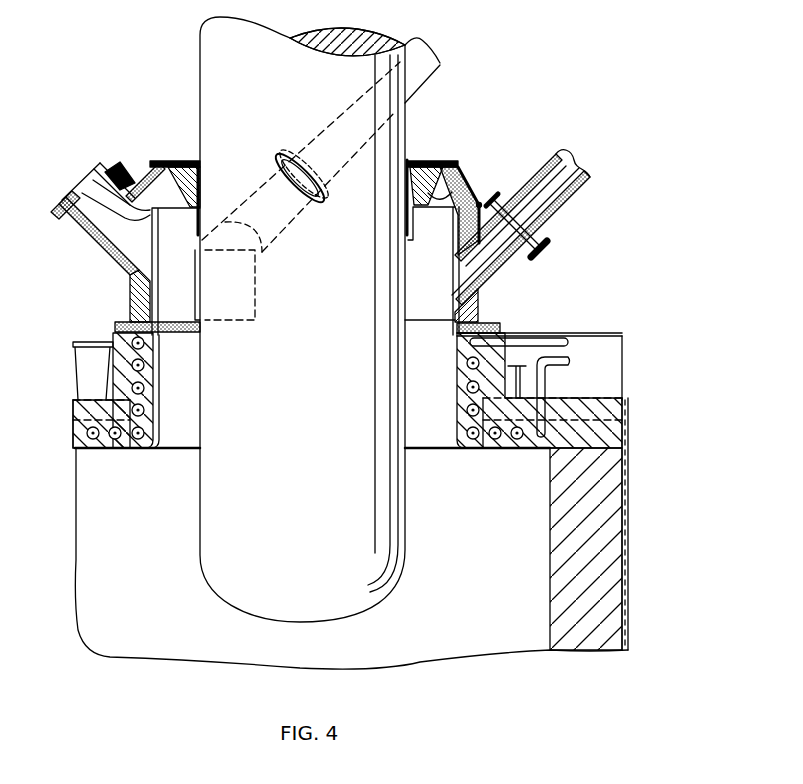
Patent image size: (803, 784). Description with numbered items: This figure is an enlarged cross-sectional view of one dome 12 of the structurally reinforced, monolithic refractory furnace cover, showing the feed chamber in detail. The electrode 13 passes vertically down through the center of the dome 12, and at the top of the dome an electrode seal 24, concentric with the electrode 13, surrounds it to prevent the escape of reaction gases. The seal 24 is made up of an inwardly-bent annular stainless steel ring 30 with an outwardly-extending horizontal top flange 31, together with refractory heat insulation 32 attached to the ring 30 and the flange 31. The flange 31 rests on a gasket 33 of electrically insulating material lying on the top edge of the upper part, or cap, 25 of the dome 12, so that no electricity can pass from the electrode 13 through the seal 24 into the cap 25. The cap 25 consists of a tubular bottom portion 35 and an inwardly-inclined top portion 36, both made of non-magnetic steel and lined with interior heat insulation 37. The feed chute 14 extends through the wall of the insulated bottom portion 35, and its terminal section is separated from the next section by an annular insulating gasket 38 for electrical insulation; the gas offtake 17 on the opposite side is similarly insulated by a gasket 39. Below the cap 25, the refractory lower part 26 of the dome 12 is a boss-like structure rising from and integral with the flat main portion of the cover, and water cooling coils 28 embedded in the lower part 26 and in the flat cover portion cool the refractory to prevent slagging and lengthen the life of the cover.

The dome 12 is at (487, 314).
The electrode 13 is at (320, 319).
The feed chute 14 is at (555, 219).
The gas offtake 17 is at (108, 257).
The electrode seal 24 is at (184, 163).
The upper part of dome (cap) 25 is at (481, 204).
The lower part of dome 26 is at (150, 373).
The water cooling coils 28 is at (140, 447).
The annular stainless steel ring 30 is at (412, 228).
The top flange 31 is at (436, 162).
The refractory heat insulation 32 is at (475, 205).
The gasket 33 is at (451, 165).
The tubular bottom portion 35 is at (130, 298).
The inwardly-inclined top portion 36 is at (148, 178).
The interior heat insulation 37 is at (459, 230).
The annular insulating gasket 38 is at (540, 251).
The gasket 39 is at (70, 229).